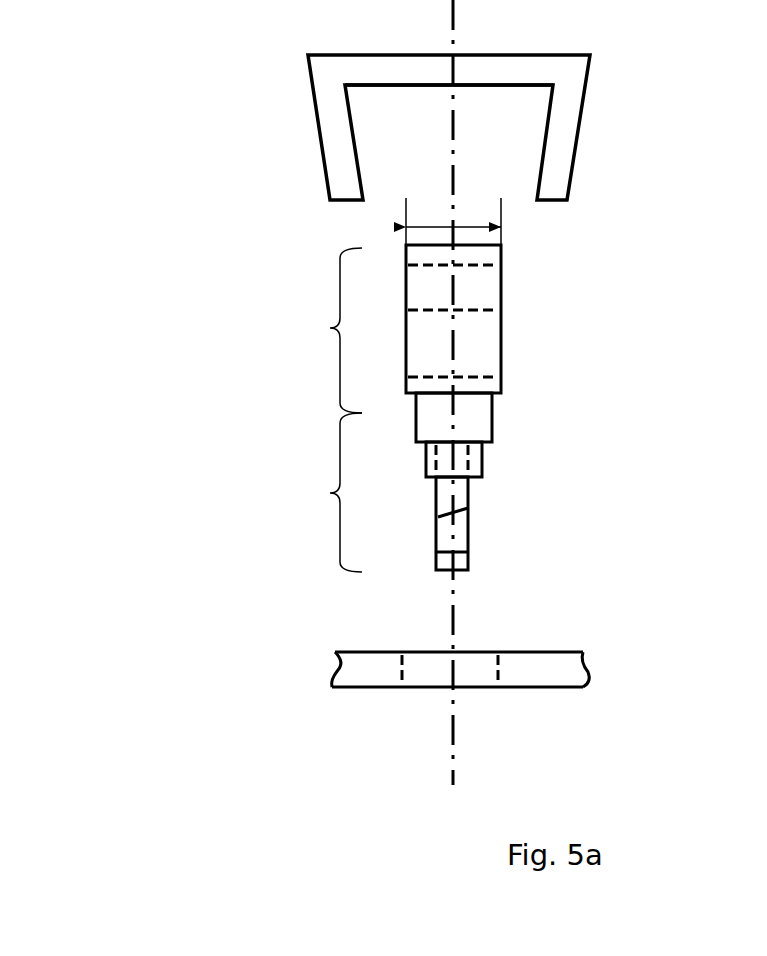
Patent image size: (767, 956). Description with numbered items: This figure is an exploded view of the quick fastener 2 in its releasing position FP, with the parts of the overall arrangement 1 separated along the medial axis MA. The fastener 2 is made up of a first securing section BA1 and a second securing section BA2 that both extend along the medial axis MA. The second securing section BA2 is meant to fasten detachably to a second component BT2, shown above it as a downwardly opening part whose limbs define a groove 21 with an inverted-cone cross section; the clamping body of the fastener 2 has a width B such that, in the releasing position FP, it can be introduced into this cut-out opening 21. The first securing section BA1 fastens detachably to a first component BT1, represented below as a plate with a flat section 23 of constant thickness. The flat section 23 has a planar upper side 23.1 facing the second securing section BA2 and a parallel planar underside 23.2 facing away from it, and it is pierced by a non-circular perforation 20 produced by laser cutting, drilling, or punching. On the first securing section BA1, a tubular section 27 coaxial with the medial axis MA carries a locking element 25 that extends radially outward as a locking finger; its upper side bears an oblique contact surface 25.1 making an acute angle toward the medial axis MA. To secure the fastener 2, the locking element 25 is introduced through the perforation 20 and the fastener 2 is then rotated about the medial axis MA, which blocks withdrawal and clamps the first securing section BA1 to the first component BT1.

The device / arrangement 1 is at (215, 155).
The quick fastener 2 is at (480, 418).
The non-circular perforation 20 is at (437, 687).
The downwardly-opening groove 21 is at (408, 133).
The flat section 23 is at (483, 678).
The planar upper side 23.1 is at (562, 650).
The planar underside 23.2 is at (548, 688).
The locking element 25 is at (474, 532).
The oblique contact surface 25.1 is at (465, 508).
The tubular section 27 is at (436, 560).
The width B is at (453, 215).
The first securing section BA1 is at (337, 493).
The second securing section BA2 is at (337, 328).
The first component BT1 is at (449, 678).
The second component BT2 is at (531, 150).
The releasing position FP is at (188, 430).
The medial axis MA is at (459, 407).